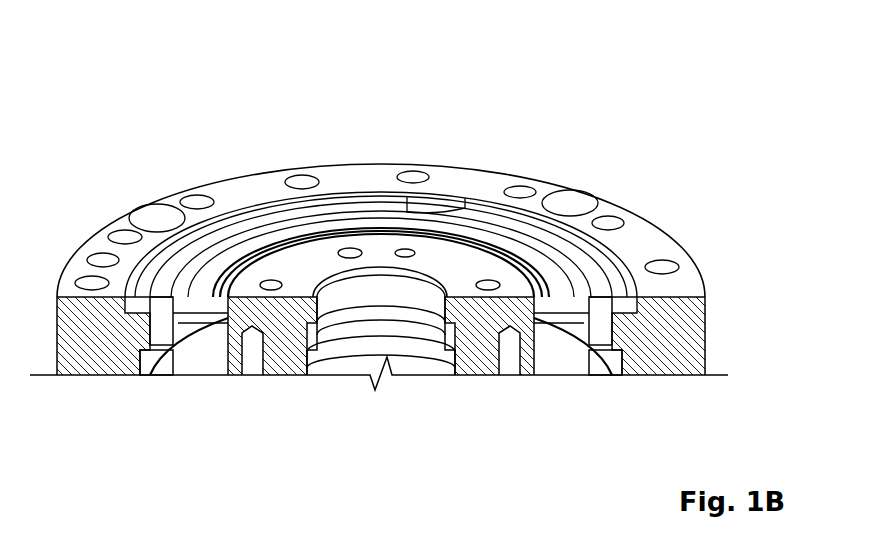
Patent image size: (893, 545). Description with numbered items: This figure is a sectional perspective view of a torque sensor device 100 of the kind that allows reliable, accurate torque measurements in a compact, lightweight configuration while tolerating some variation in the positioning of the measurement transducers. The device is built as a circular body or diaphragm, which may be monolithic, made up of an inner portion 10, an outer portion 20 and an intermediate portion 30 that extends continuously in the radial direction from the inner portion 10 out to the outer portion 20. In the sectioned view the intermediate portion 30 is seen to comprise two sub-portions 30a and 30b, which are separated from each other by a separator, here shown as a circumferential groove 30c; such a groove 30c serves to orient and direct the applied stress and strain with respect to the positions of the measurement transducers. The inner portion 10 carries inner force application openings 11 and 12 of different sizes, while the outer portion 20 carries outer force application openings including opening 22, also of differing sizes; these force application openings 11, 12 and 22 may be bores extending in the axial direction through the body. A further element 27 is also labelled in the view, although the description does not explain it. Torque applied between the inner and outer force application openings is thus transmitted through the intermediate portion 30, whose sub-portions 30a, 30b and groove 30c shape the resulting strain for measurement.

The torque sensor device 100 is at (128, 54).
The inner portion 10 is at (462, 262).
The inner force application opening 11 is at (404, 247).
The inner force application opening 12 is at (349, 247).
The outer portion 20 is at (672, 252).
The outer force application opening 22 is at (557, 300).
The inner ring 27 is at (612, 290).
The intermediate portion 30 is at (243, 240).
The sub-portion 30a is at (559, 300).
The sub-portion 30b is at (606, 300).
The circumferential groove 30c is at (613, 322).